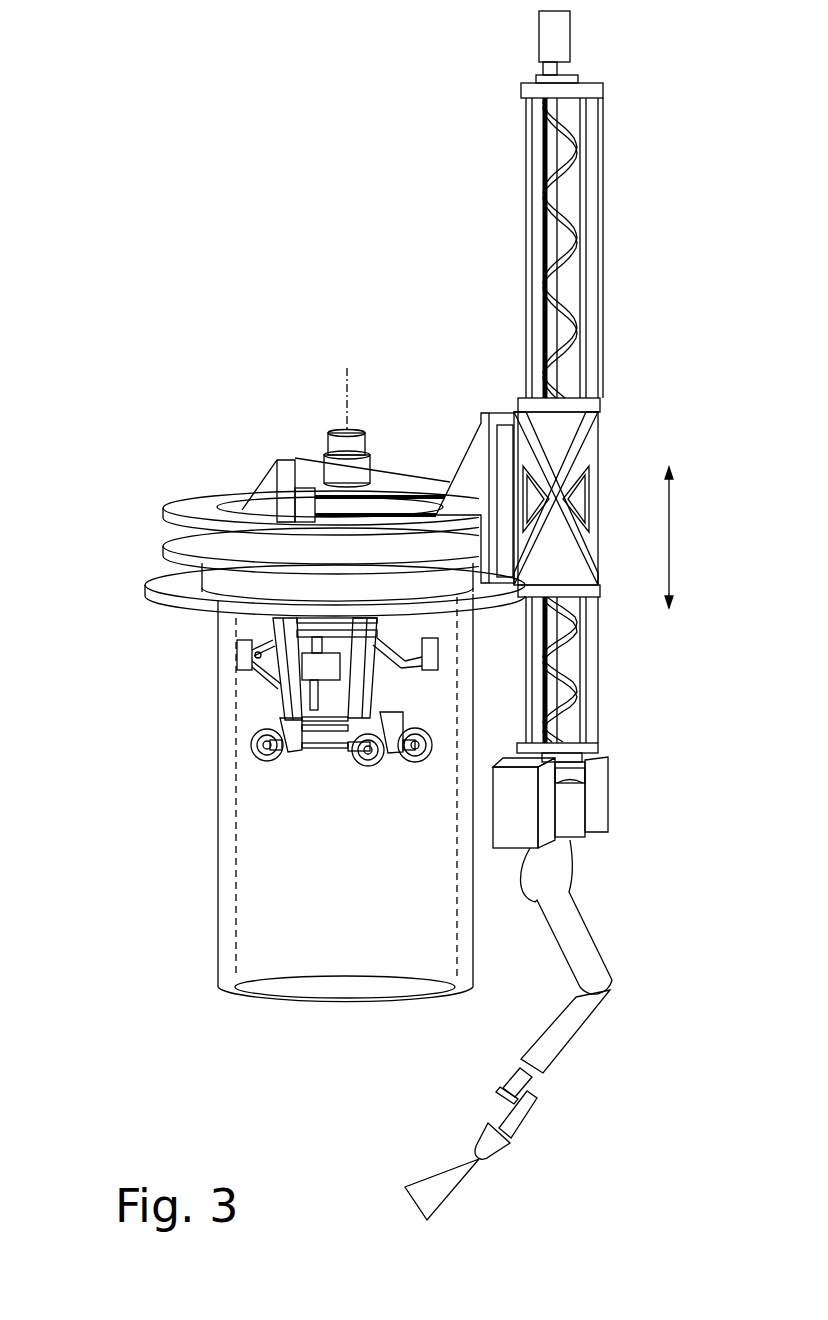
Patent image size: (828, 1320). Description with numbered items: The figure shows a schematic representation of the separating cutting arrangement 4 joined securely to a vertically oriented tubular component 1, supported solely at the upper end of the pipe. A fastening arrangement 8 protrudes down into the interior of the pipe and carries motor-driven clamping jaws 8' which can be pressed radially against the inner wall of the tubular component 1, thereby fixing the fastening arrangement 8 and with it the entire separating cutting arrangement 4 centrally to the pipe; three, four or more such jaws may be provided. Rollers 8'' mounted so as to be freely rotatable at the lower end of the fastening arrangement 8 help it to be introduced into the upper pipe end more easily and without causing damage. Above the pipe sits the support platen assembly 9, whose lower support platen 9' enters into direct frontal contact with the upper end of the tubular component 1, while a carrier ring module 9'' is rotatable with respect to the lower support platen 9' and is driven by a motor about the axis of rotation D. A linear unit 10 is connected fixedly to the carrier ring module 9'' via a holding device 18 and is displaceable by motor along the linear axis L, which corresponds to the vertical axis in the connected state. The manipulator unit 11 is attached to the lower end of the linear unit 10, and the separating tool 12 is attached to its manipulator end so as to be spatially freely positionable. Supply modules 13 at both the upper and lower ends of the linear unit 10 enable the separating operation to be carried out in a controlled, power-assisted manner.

The tubular component 1 is at (267, 903).
The separating cutting arrangement 4 is at (290, 306).
The fastening arrangement 8 is at (254, 692).
The clamping jaws 8' is at (312, 681).
The rollers 8'' is at (302, 784).
The support platen assembly 9 is at (279, 506).
The lower support platen 9' is at (316, 564).
The carrier ring module 9'' is at (319, 483).
The linear unit 10 is at (567, 223).
The manipulator unit 11 is at (582, 942).
The separating tool 12 is at (493, 1147).
The supply modules 13 is at (547, 825).
The holding device 18 is at (470, 473).
The axis of rotation D is at (347, 413).
The linear axis L is at (679, 537).